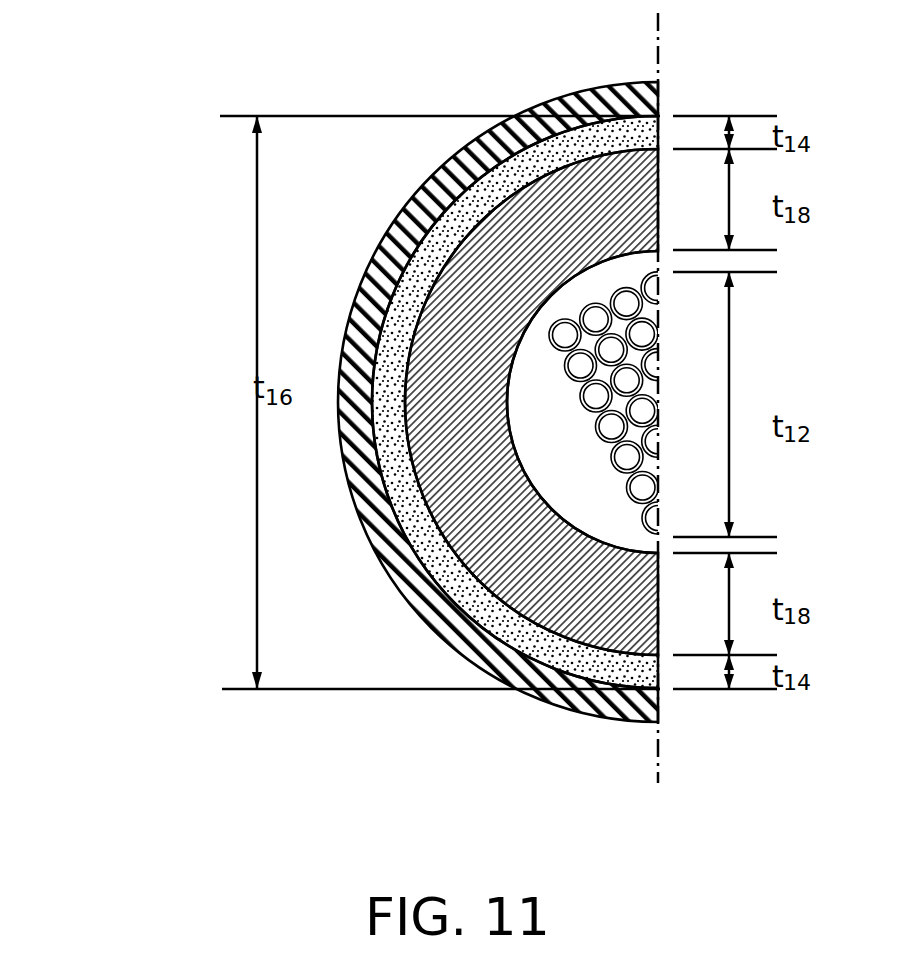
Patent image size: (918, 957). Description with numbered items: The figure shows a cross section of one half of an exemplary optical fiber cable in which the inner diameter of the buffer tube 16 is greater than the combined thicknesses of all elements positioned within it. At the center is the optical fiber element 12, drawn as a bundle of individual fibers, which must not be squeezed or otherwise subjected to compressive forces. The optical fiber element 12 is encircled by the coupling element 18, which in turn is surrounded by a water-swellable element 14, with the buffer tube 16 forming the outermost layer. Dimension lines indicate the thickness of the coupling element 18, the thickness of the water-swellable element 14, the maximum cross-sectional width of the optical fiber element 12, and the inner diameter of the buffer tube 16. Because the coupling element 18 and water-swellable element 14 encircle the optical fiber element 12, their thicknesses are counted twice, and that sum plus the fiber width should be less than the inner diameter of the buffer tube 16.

The optical fiber element 12 is at (623, 487).
The water-swellable element 14 is at (433, 250).
The buffer tube 16 is at (443, 167).
The coupling element 18 is at (480, 513).